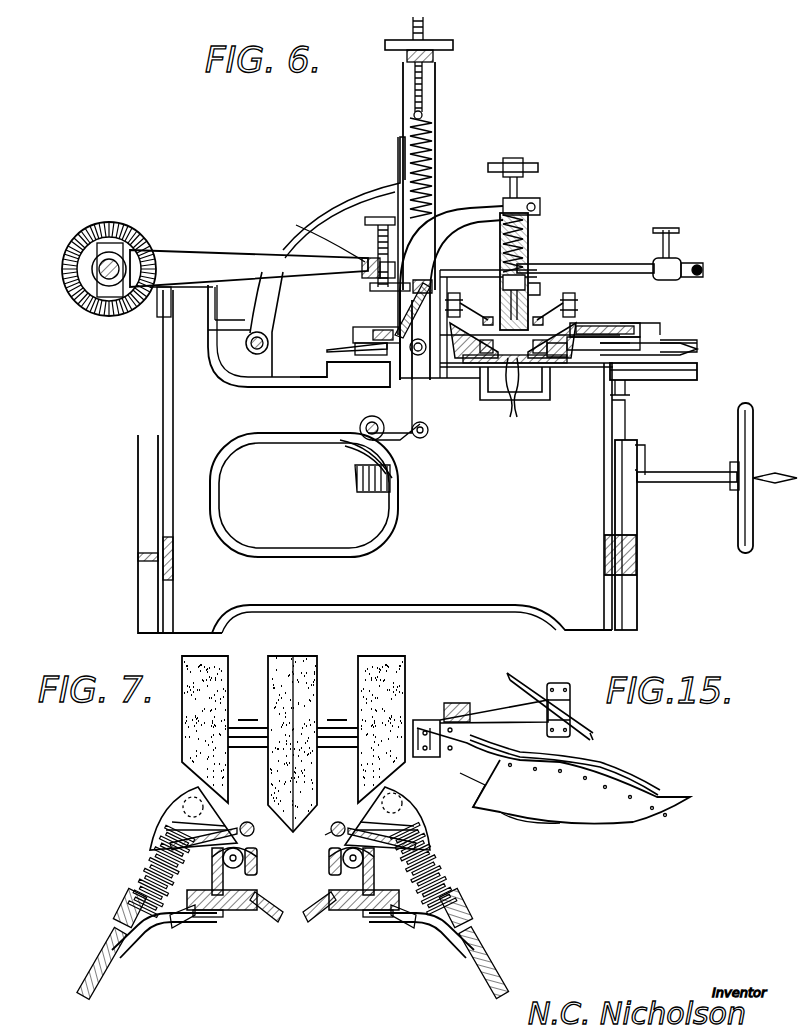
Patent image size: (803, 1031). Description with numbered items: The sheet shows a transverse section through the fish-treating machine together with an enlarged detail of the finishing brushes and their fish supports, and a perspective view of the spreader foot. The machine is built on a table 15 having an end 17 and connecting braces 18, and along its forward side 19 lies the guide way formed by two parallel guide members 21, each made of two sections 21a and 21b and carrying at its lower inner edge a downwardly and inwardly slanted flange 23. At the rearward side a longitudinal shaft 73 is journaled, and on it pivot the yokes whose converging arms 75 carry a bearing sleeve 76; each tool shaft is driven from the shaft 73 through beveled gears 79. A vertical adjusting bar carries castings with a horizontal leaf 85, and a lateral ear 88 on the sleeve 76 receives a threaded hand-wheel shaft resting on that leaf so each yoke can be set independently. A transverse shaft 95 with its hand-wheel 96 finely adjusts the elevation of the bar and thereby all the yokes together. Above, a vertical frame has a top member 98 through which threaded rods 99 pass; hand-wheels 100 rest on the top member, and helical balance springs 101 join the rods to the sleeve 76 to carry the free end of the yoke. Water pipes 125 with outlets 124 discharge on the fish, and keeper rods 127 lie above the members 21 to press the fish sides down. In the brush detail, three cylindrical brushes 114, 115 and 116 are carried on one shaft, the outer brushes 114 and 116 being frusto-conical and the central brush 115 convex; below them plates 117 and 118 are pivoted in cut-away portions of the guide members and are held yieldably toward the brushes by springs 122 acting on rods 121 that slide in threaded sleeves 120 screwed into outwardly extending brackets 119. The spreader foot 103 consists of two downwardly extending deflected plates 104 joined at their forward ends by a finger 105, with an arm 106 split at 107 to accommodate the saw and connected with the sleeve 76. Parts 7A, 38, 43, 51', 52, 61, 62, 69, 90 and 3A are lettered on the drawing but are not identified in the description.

In FIG. 6, the hand-wheel 100 is at (440, 45).
In FIG. 6, the top member 98 is at (434, 58).
In FIG. 6, the threaded rod 99 is at (436, 88).
In FIG. 6, the helical spring 101 is at (430, 165).
In FIG. 6, the bearing sleeve 76 is at (456, 258).
In FIG. 6, the link 90 is at (400, 277).
In FIG. 6, the rod 62 is at (354, 208).
In FIG. 6, the link 69 is at (390, 192).
In FIG. 6, the lateral ear 88 is at (374, 262).
In FIG. 6, the horizontal leaf 85 is at (372, 286).
In FIG. 6, the yoke arm 75 is at (295, 300).
In FIG. 6, the slide plate 51' is at (518, 328).
In FIG. 6, the beveled gear 79 is at (110, 258).
In FIG. 6, the longitudinal shaft 73 is at (135, 252).
In FIG. 6, the gear wheel 7A is at (92, 308).
In FIG. 6, the pivot 61 is at (255, 347).
In FIG. 6, the slide bar 52 is at (330, 347).
In FIG. 6, the guide 43 is at (376, 340).
In FIG. 6, the hopper 38 is at (446, 300).
In FIG. 6, the outlet 124 is at (541, 290).
In FIG. 6, the water pipe 125 is at (628, 268).
In FIG. 6, the keeper rod 127 is at (535, 325).
In FIG. 7, the keeper rod 127 is at (282, 838).
In FIG. 6, the rail 3A is at (610, 350).
In FIG. 6, the guide member section 21a is at (555, 347).
In FIG. 7, the guide member section 21a is at (372, 888).
In FIG. 6, the slanted flange 23 is at (512, 402).
In FIG. 7, the slanted flange 23 is at (272, 922).
In FIG. 6, the guide member section 21b is at (567, 382).
In FIG. 7, the guide member section 21b is at (362, 915).
In FIG. 6, the forward side 19 is at (610, 410).
In FIG. 6, the table 15 is at (632, 408).
In FIG. 6, the hand-wheel 96 is at (745, 425).
In FIG. 6, the transverse shaft 95 is at (696, 478).
In FIG. 6, the connecting brace 18 is at (630, 585).
In FIG. 6, the table end 17 is at (528, 585).
In FIG. 7, the cylindrical brush 115 is at (300, 668).
In FIG. 7, the cylindrical brush 116 is at (406, 727).
In FIG. 7, the cylindrical brush 114 is at (192, 725).
In FIG. 7, the plate 117 is at (198, 806).
In FIG. 7, the plate 118 is at (398, 806).
In FIG. 7, the spring 122 is at (150, 840).
In FIG. 7, the guide member 21 is at (237, 888).
In FIG. 7, the bracket 119 is at (178, 920).
In FIG. 7, the threaded sleeve 120 is at (125, 930).
In FIG. 7, the rod 121 is at (96, 990).
In FIG. 15, the split 107 is at (588, 758).
In FIG. 15, the guide and spreader foot 103 is at (624, 781).
In FIG. 15, the deflected plate 104 is at (560, 808).
In FIG. 15, the finger 105 is at (690, 799).
In FIG. 15, the arm 106 is at (475, 790).